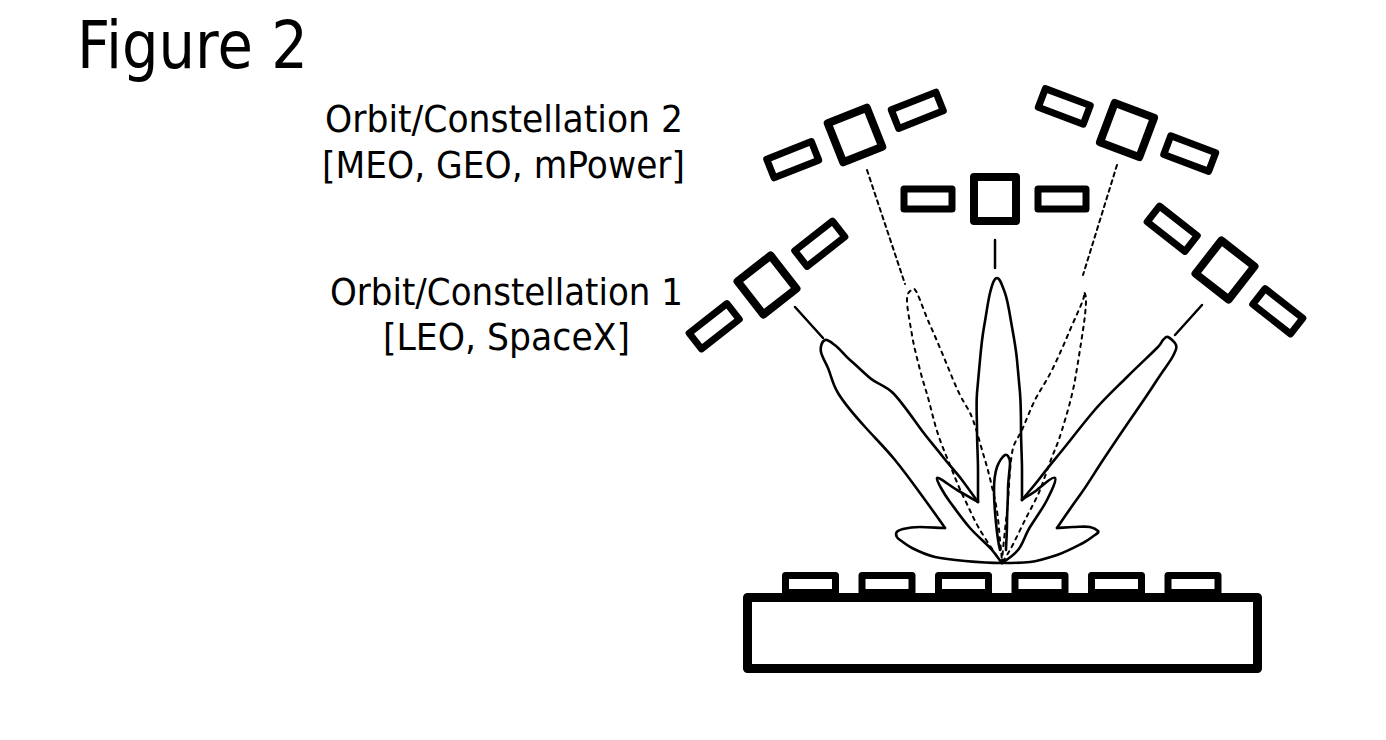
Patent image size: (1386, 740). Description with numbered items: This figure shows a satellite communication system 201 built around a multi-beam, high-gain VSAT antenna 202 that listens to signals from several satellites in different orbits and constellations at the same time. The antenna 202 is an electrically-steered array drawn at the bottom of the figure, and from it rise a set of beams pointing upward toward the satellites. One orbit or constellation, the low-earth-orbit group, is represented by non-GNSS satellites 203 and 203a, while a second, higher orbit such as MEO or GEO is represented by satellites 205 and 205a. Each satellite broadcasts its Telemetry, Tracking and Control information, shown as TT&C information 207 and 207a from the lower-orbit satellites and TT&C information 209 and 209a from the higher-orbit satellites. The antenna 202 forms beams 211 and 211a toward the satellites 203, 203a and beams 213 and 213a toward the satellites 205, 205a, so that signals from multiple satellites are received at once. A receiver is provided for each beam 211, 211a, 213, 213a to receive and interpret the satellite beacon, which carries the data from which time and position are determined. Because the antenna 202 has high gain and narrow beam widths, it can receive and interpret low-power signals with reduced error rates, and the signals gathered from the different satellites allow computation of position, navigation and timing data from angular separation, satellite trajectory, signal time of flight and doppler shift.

The satellite communication system 201 is at (942, 633).
The antenna 202 is at (960, 573).
The non-GNSS satellite 203 is at (1258, 280).
The MEO/GEO satellite (orbit/constellation 2) 203a is at (995, 182).
The non-GNSS satellite 205 is at (1126, 125).
The MEO/GEO satellite (orbit/constellation 2) 205a is at (855, 130).
The TT&C information 207 is at (1204, 341).
The link to MEO/GEO satellite 207a is at (1031, 256).
The TT&C information 209 is at (1114, 220).
The link to MEO/GEO satellite 205a 209a is at (913, 227).
The beam 211 is at (1111, 432).
The antenna beam toward MEO/GEO satellite 203a 211a is at (1022, 389).
The beam 213 is at (1069, 427).
The antenna beam toward satellite 205a 213a is at (954, 419).